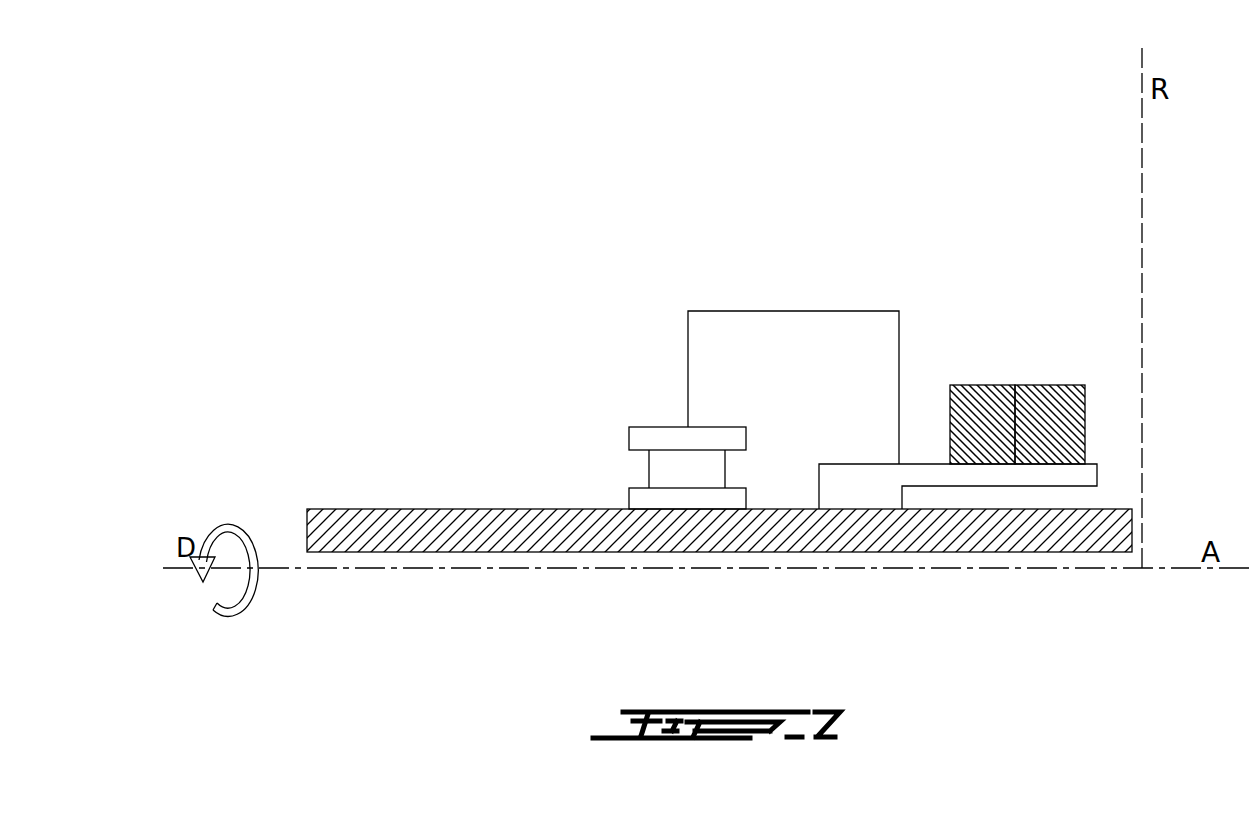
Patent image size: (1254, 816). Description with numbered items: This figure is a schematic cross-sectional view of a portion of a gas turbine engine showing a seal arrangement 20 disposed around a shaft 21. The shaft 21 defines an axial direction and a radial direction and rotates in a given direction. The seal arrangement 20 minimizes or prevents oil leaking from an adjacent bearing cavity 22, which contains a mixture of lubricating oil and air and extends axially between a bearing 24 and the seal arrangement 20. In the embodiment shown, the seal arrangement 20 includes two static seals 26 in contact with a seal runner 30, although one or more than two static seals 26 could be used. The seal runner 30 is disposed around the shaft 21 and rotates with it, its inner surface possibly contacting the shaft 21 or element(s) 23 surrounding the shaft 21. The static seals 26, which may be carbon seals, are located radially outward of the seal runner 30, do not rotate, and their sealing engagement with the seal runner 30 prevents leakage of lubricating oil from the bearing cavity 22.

The seal arrangement 20 is at (870, 440).
The shaft 21 is at (835, 556).
The bearing cavity 22 is at (778, 455).
The element(s) surrounding the shaft 23 is at (988, 510).
The bearing 24 is at (647, 427).
The static seals 26 is at (1050, 383).
The seal runner 30 is at (932, 457).